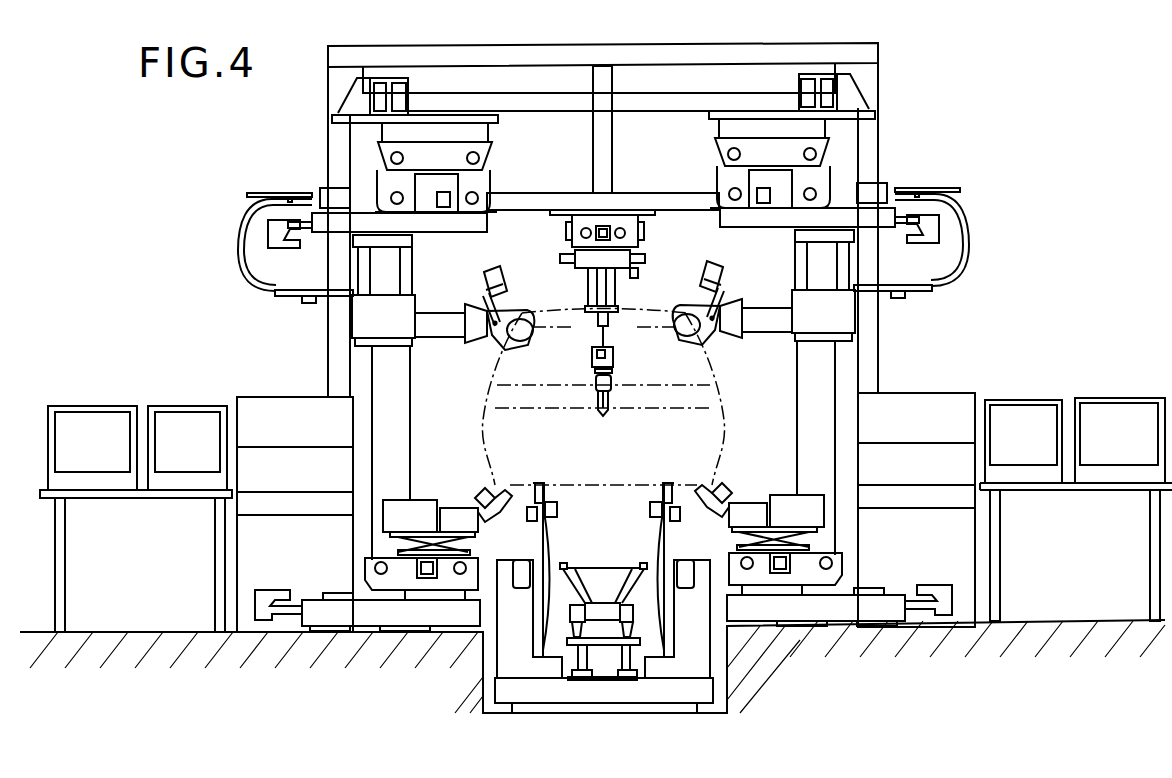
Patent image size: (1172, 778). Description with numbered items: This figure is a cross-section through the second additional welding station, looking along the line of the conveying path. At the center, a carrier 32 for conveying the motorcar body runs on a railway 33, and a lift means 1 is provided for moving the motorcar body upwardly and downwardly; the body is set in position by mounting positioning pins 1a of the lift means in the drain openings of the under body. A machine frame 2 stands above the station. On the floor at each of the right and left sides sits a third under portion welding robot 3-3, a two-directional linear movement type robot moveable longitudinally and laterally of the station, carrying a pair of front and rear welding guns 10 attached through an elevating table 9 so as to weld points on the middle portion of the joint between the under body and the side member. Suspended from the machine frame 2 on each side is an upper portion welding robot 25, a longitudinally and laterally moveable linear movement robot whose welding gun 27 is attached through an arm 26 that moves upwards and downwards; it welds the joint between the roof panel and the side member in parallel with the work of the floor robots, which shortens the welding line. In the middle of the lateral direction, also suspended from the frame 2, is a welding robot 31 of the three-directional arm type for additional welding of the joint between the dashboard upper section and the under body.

The lift means 1 is at (530, 608).
The positioning pins 1a is at (655, 484).
The machine frame 2 is at (530, 100).
The third under portion welding robot 3-3 is at (388, 546).
The elevating table 9 is at (410, 530).
The welding guns 10 is at (488, 490).
The upper portion welding robot 25 is at (352, 326).
The arm 26 is at (444, 322).
The welding gun 27 is at (516, 308).
The welding robot 31 is at (579, 296).
The carrier 32 is at (598, 567).
The railway 33 is at (605, 645).